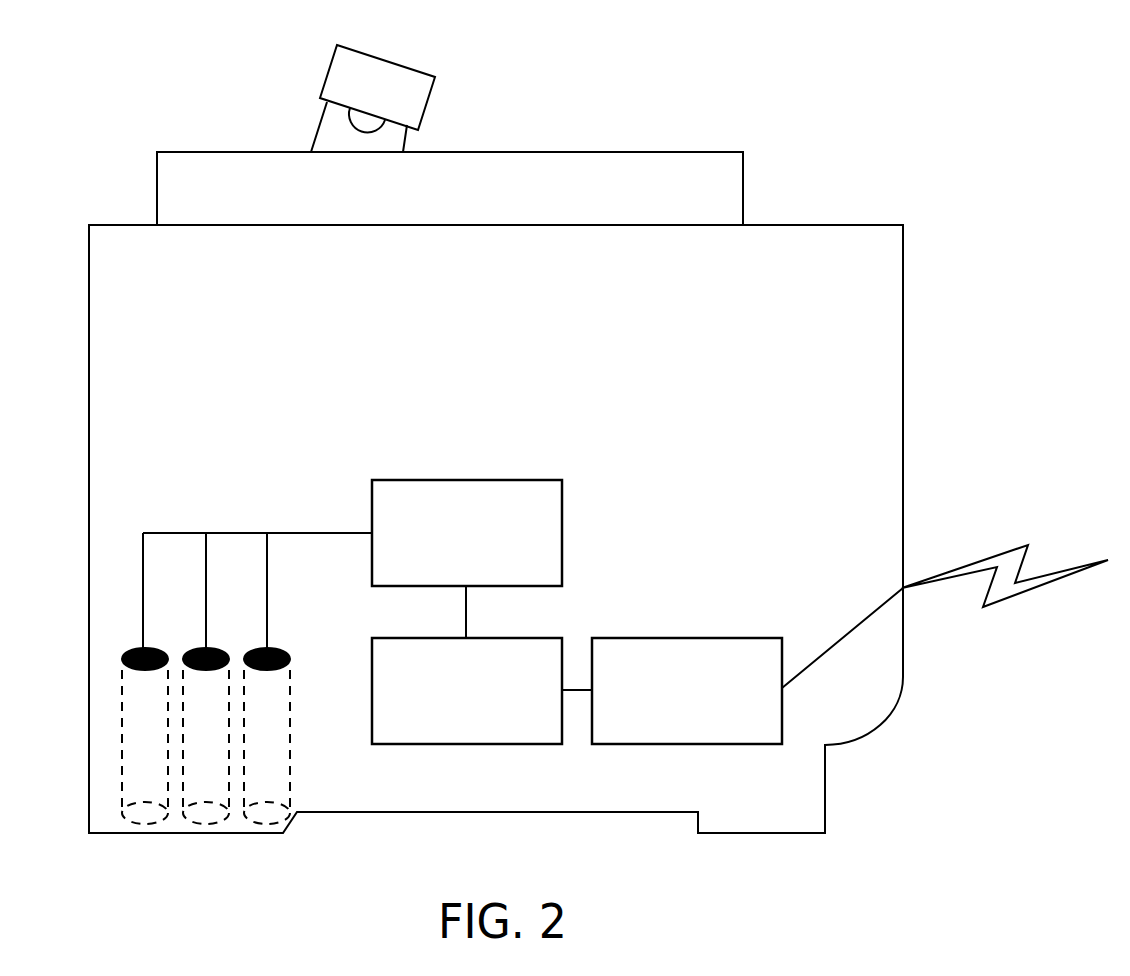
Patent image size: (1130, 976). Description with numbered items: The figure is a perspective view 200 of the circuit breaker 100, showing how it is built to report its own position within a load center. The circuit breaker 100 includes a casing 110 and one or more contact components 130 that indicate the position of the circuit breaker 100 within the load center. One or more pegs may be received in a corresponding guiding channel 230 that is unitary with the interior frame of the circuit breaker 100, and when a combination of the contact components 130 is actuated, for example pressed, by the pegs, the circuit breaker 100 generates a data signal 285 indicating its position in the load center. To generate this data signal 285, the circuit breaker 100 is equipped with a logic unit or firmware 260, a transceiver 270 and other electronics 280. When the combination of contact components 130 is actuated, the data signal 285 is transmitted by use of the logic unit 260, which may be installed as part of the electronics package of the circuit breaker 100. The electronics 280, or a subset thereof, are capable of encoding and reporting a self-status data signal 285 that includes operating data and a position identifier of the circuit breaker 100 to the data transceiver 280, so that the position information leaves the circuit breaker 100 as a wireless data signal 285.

The perspective view 200 is at (570, 468).
The circuit breaker 100 is at (553, 439).
The casing 110 is at (903, 355).
The contact components 130 is at (202, 723).
The guiding channel 230 is at (270, 777).
The logic unit or firmware 260 is at (490, 571).
The transceiver 270 is at (488, 719).
The electronics 280 is at (708, 719).
The data signal 285 is at (1055, 573).